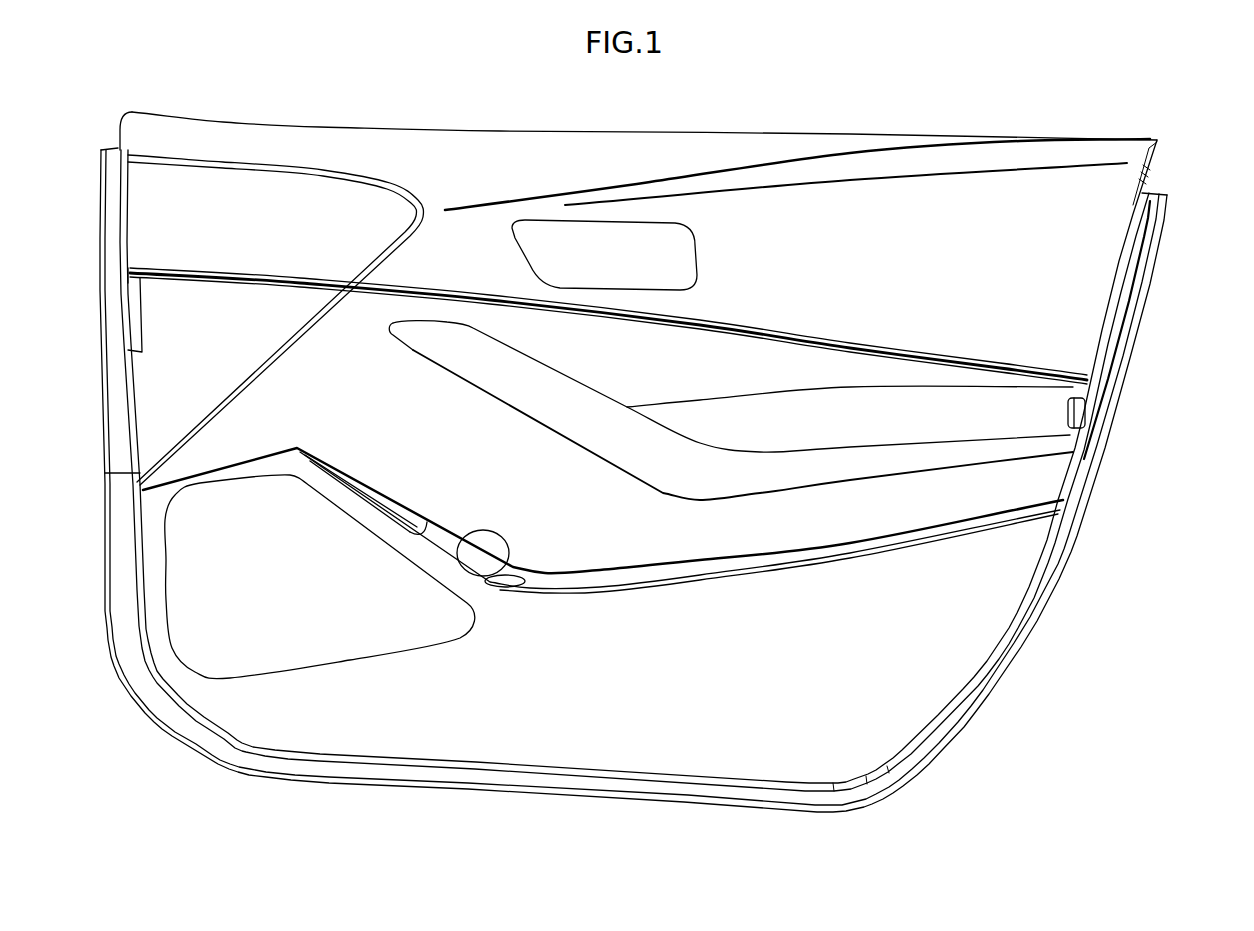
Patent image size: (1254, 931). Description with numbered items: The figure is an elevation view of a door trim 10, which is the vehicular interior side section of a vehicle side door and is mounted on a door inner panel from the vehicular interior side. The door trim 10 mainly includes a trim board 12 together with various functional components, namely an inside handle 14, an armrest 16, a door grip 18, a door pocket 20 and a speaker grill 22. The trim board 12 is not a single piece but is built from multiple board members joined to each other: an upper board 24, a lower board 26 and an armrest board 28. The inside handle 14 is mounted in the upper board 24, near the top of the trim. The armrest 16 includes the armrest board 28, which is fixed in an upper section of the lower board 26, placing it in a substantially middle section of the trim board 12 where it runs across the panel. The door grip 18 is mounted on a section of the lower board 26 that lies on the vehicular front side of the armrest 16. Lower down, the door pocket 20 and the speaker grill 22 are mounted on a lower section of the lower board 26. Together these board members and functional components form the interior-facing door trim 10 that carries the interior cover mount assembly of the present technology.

The door trim 10 is at (986, 90).
The trim board 12 is at (1196, 355).
The inside handle 14 is at (608, 240).
The armrest 16 is at (917, 395).
The door grip 18 is at (474, 318).
The door pocket 20 is at (508, 580).
The speaker grill 22 is at (287, 642).
The upper board 24 is at (1067, 330).
The lower board 26 is at (1023, 540).
The armrest board 28 is at (1042, 415).